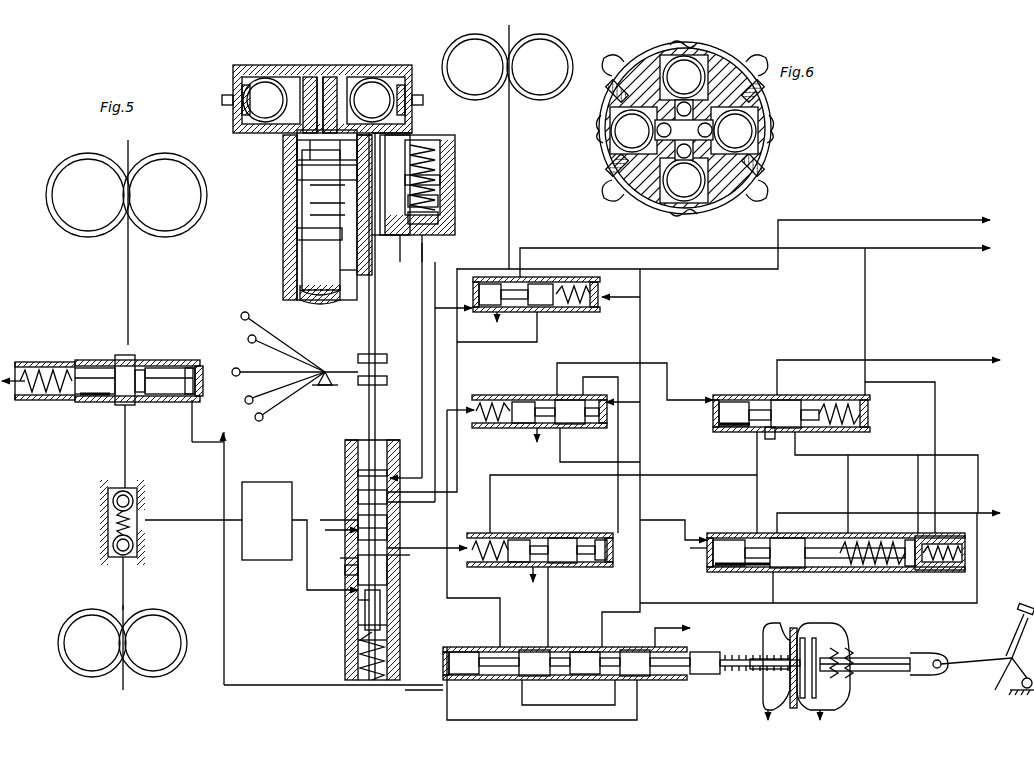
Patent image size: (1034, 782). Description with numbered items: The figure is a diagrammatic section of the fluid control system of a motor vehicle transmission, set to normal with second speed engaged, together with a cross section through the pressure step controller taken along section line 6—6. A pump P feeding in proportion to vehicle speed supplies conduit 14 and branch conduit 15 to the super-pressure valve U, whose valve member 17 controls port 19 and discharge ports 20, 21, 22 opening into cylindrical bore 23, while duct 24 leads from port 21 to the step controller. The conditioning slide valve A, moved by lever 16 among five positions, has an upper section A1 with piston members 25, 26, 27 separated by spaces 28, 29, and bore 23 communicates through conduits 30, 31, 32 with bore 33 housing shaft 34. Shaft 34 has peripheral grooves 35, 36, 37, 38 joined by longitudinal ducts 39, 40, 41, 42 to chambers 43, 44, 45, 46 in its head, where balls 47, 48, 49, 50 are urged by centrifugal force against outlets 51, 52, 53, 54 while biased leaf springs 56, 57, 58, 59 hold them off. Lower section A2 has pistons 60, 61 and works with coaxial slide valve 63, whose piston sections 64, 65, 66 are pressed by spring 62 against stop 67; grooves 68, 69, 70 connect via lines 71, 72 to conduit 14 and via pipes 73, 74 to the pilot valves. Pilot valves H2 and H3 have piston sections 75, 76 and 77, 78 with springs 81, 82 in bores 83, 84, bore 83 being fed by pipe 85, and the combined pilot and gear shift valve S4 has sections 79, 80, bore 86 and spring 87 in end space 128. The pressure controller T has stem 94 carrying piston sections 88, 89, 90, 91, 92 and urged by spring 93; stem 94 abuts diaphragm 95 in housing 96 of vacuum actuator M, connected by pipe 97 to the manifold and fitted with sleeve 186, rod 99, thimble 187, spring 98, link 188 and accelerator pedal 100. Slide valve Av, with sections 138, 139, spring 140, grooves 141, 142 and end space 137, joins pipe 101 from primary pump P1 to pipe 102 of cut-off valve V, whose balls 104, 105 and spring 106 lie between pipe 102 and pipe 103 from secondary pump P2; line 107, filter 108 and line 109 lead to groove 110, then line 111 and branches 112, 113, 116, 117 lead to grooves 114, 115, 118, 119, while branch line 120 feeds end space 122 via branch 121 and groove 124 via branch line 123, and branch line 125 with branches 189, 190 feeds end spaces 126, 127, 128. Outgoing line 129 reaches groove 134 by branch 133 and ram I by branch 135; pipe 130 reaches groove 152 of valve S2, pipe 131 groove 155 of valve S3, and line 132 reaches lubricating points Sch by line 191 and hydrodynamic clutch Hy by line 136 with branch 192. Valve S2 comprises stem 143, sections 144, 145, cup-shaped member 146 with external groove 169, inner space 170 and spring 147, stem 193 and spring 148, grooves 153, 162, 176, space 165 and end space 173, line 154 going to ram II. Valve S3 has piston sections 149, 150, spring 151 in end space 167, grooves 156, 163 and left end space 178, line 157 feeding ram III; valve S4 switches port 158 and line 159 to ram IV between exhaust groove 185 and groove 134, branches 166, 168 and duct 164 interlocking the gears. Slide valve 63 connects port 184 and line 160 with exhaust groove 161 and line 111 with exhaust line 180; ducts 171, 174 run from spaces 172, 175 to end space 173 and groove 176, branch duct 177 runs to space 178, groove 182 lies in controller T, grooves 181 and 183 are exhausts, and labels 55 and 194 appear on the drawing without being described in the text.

In FIG. 5, the section line 6— 6 is at (222, 100).
In FIG. 5, the conduit 14 is at (520, 184).
In FIG. 5, the branch conduit 15 is at (424, 250).
In FIG. 5, the lever 16 is at (327, 368).
In FIG. 5, the valve member 17 is at (445, 222).
In FIG. 5, the port 19 is at (410, 259).
In FIG. 5, the discharge port 20 is at (445, 205).
In FIG. 5, the discharge port 21 is at (445, 187).
In FIG. 5, the discharge port 22 is at (445, 158).
In FIG. 5, the cylindrical bore 23 is at (401, 125).
In FIG. 5, the duct 24 is at (408, 178).
In FIG. 5, the piston member 25 is at (376, 280).
In FIG. 5, the piston member 26 is at (392, 242).
In FIG. 5, the piston member 27 is at (327, 186).
In FIG. 5, the space 28 is at (345, 285).
In FIG. 5, the space 29 is at (327, 203).
In FIG. 5, the conduit 30 is at (345, 225).
In FIG. 5, the conduit 31 is at (327, 218).
In FIG. 5, the conduit 32 is at (371, 205).
In FIG. 5, the cylindrical bore 33 is at (283, 268).
In FIG. 5, the shaft 34 is at (315, 300).
In FIG. 5, the peripheral groove 35 is at (297, 233).
In FIG. 5, the peripheral groove 36 is at (297, 200).
In FIG. 5, the peripheral groove 37 is at (297, 178).
In FIG. 5, the peripheral groove 38 is at (297, 152).
In FIG. 6, the longitudinal duct 39 is at (684, 180).
In FIG. 5, the longitudinal duct 40 is at (312, 75).
In FIG. 6, the longitudinal duct 40 is at (633, 130).
In FIG. 6, the longitudinal duct 41 is at (684, 77).
In FIG. 5, the longitudinal duct 42 is at (332, 75).
In FIG. 6, the longitudinal duct 42 is at (734, 130).
In FIG. 6, the chamber 43 is at (650, 205).
In FIG. 5, the chamber 44 is at (255, 75).
In FIG. 6, the chamber 44 is at (612, 97).
In FIG. 6, the chamber 45 is at (700, 95).
In FIG. 5, the chamber 46 is at (385, 75).
In FIG. 6, the chamber 46 is at (768, 98).
In FIG. 6, the ball 47 is at (668, 208).
In FIG. 5, the ball 48 is at (252, 110).
In FIG. 6, the ball 48 is at (615, 140).
In FIG. 6, the ball 49 is at (700, 72).
In FIG. 6, the ball 50 is at (765, 148).
In FIG. 6, the outlet 51 is at (684, 215).
In FIG. 5, the outlet 52 is at (242, 82).
In FIG. 6, the outlet 52 is at (605, 128).
In FIG. 6, the outlet 53 is at (684, 42).
In FIG. 5, the outlet 54 is at (405, 82).
In FIG. 6, the outlet 54 is at (775, 128).
In FIG. 6, the housing portion 55 is at (750, 170).
In FIG. 6, the leaf spring 56 is at (725, 208).
In FIG. 6, the leaf spring 57 is at (612, 175).
In FIG. 6, the leaf spring 58 is at (650, 62).
In FIG. 6, the leaf spring 59 is at (771, 108).
In FIG. 5, the piston 60 is at (362, 490).
In FIG. 5, the piston 61 is at (334, 529).
In FIG. 5, the spring 62 is at (360, 658).
In FIG. 5, the slide valve 63 is at (381, 605).
In FIG. 5, the piston section 64 is at (388, 527).
In FIG. 5, the piston section 65 is at (388, 570).
In FIG. 5, the piston section 66 is at (358, 625).
In FIG. 5, the stop 67 is at (350, 570).
In FIG. 5, the internal groove 68 is at (355, 480).
In FIG. 5, the internal groove 69 is at (362, 495).
In FIG. 5, the internal groove 70 is at (337, 517).
In FIG. 5, the branch conduit 71 is at (422, 375).
In FIG. 5, the line 72 is at (406, 468).
In FIG. 5, the pipe 73 is at (457, 470).
In FIG. 5, the pipe 74 is at (417, 503).
In FIG. 5, the piston section 75 is at (537, 574).
In FIG. 5, the piston section 76 is at (600, 562).
In FIG. 5, the piston section 77 is at (538, 431).
In FIG. 5, the piston section 78 is at (580, 425).
In FIG. 5, the piston section 79 is at (493, 309).
In FIG. 5, the piston section 80 is at (542, 308).
In FIG. 5, the spring 81 is at (513, 563).
In FIG. 5, the spring 82 is at (515, 424).
In FIG. 5, the cylinder bore 83 is at (486, 562).
In FIG. 5, the cylinder bore 84 is at (480, 400).
In FIG. 5, the pipe 85 is at (427, 540).
In FIG. 5, the cylinder bore 86 is at (460, 306).
In FIG. 5, the spring 87 is at (598, 290).
In FIG. 5, the piston section 88 is at (470, 676).
In FIG. 5, the piston section 89 is at (505, 680).
In FIG. 5, the piston section 90 is at (560, 678).
In FIG. 5, the piston section 91 is at (618, 680).
In FIG. 5, the piston section 92 is at (695, 676).
In FIG. 5, the spring 93 is at (735, 675).
In FIG. 5, the stem 94 is at (770, 658).
In FIG. 5, the diaphragm 95 is at (791, 685).
In FIG. 5, the housing 96 is at (848, 695).
In FIG. 5, the pipe 97 is at (826, 710).
In FIG. 5, the helical pressure spring 98 is at (815, 640).
In FIG. 5, the rod 99 is at (918, 676).
In FIG. 5, the accelerator pedal 100 is at (1010, 655).
In FIG. 5, the pipe 101 is at (128, 262).
In FIG. 5, the pipe 102 is at (125, 430).
In FIG. 5, the pipe 103 is at (121, 588).
In FIG. 5, the ball 104 is at (135, 500).
In FIG. 5, the ball 105 is at (135, 548).
In FIG. 5, the helical spring 106 is at (112, 512).
In FIG. 5, the line 107 is at (197, 521).
In FIG. 5, the filter 108 is at (268, 486).
In FIG. 5, the line 109 is at (330, 590).
In FIG. 5, the internal groove 110 is at (365, 598).
In FIG. 5, the line 111 is at (381, 620).
In FIG. 5, the branch line 112 is at (406, 690).
In FIG. 5, the branch line 113 is at (514, 500).
In FIG. 5, the internal groove 114 is at (547, 645).
In FIG. 5, the internal groove 115 is at (601, 645).
In FIG. 5, the line 116 is at (618, 512).
In FIG. 5, the pipe 117 is at (600, 449).
In FIG. 5, the groove 118 is at (565, 564).
In FIG. 5, the control groove 119 is at (582, 378).
In FIG. 5, the branch line 120 is at (362, 686).
In FIG. 5, the branch 121 is at (448, 698).
In FIG. 5, the end space 122 is at (465, 650).
In FIG. 5, the branch line 123 is at (638, 716).
In FIG. 5, the internal groove 124 is at (645, 678).
In FIG. 5, the branch line 125 is at (473, 528).
In FIG. 5, the end space 126 is at (605, 563).
In FIG. 5, the end space 127 is at (605, 424).
In FIG. 5, the end space 128 is at (600, 304).
In FIG. 5, the outgoing line 129 is at (505, 603).
In FIG. 5, the pipe 130 is at (550, 612).
In FIG. 5, the pipe 131 is at (640, 573).
In FIG. 5, the line 132 is at (656, 630).
In FIG. 5, the branch line 133 is at (512, 342).
In FIG. 5, the internal groove 134 is at (515, 310).
In FIG. 5, the branch line 135 is at (685, 270).
In FIG. 5, the line 136 is at (232, 582).
In FIG. 5, the end space 137 is at (200, 385).
In FIG. 5, the cylindrical section 138 is at (80, 368).
In FIG. 5, the cylindrical section 139 is at (185, 372).
In FIG. 5, the spring 140 is at (40, 372).
In FIG. 5, the groove 141 is at (168, 366).
In FIG. 5, the internal groove 142 is at (85, 396).
In FIG. 5, the valve stem 143 is at (775, 547).
In FIG. 5, the cylindrical section 144 is at (730, 551).
In FIG. 5, the cylindrical section 145 is at (805, 566).
In FIG. 5, the cup-shaped valve member 146 is at (935, 571).
In FIG. 5, the helical pressure spring 147 is at (965, 555).
In FIG. 5, the helical spring 148 is at (850, 533).
In FIG. 5, the piston section 149 is at (735, 428).
In FIG. 5, the piston section 150 is at (812, 424).
In FIG. 5, the spring 151 is at (853, 428).
In FIG. 5, the internal groove 152 is at (760, 570).
In FIG. 5, the groove 153 is at (775, 590).
In FIG. 5, the line 154 is at (894, 523).
In FIG. 5, the internal groove 155 is at (800, 398).
In FIG. 5, the internal groove 156 is at (775, 398).
In FIG. 5, the line 157 is at (945, 360).
In FIG. 5, the port 158 is at (522, 270).
In FIG. 5, the line 159 is at (838, 248).
In FIG. 5, the line 160 is at (511, 460).
In FIG. 5, the internal groove 161 is at (335, 558).
In FIG. 5, the internal groove 162 is at (756, 528).
In FIG. 5, the internal groove 163 is at (768, 440).
In FIG. 5, the duct 164 is at (850, 465).
In FIG. 5, the space 165 is at (868, 570).
In FIG. 5, the branch line 166 is at (866, 298).
In FIG. 5, the end space 167 is at (870, 416).
In FIG. 5, the branch line 168 is at (936, 428).
In FIG. 5, the external groove 169 is at (937, 533).
In FIG. 5, the inner space 170 is at (958, 571).
In FIG. 5, the duct 171 is at (703, 505).
In FIG. 5, the space 172 is at (595, 537).
In FIG. 5, the end space 173 is at (712, 566).
In FIG. 5, the duct 174 is at (652, 363).
In FIG. 5, the space 175 is at (556, 392).
In FIG. 5, the internal groove 176 is at (912, 568).
In FIG. 5, the branch duct 177 is at (688, 400).
In FIG. 5, the left end space 178 is at (728, 424).
In FIG. 5, the line 180 is at (358, 641).
In FIG. 5, the groove 181 is at (545, 396).
In FIG. 5, the groove 182 is at (568, 700).
In FIG. 5, the groove 183 is at (548, 535).
In FIG. 5, the port 184 is at (412, 557).
In FIG. 5, the internal groove 185 is at (508, 275).
In FIG. 5, the sleeve 186 is at (870, 658).
In FIG. 5, the thimble 187 is at (840, 680).
In FIG. 5, the link 188 is at (965, 663).
In FIG. 5, the branch 189 is at (673, 528).
In FIG. 5, the branch 190 is at (641, 405).
In FIG. 5, the line 191 is at (681, 615).
In FIG. 5, the branch 192 is at (192, 444).
In FIG. 5, the stem 193 is at (875, 548).
In FIG. 5, the port 194 is at (347, 538).
In FIG. 5, the pump P is at (517, 60).
In FIG. 5, the primary pump P1 is at (126, 189).
In FIG. 5, the secondary pump P2 is at (131, 650).
In FIG. 5, the conditioning slide valve A is at (259, 148).
In FIG. 5, the upper section of conditioning valve A1 is at (458, 239).
In FIG. 5, the lower section of conditioning valve A2 is at (356, 560).
In FIG. 5, the super-pressure valve U is at (434, 176).
In FIG. 5, the cut-off valve V is at (107, 522).
In FIG. 5, the slide valve Av is at (109, 357).
In FIG. 5, the hydrodynamic clutch Hy is at (223, 420).
In FIG. 5, the gear shift valve S2 is at (836, 541).
In FIG. 5, the gear shift valve S3 is at (791, 396).
In FIG. 5, the combined pilot and gear shift valve S4 is at (536, 313).
In FIG. 5, the pilot valve H2 is at (540, 536).
In FIG. 5, the pilot valve H3 is at (539, 429).
In FIG. 5, the pressure controller T is at (565, 676).
In FIG. 5, the vacuum-controlled actuator M is at (806, 684).
In FIG. 5, the lubricating points Sch is at (703, 628).
In FIG. 5, the ram I is at (1008, 220).
In FIG. 5, the ram II is at (1015, 513).
In FIG. 5, the ram III is at (1013, 360).
In FIG. 5, the ram IV is at (1008, 248).